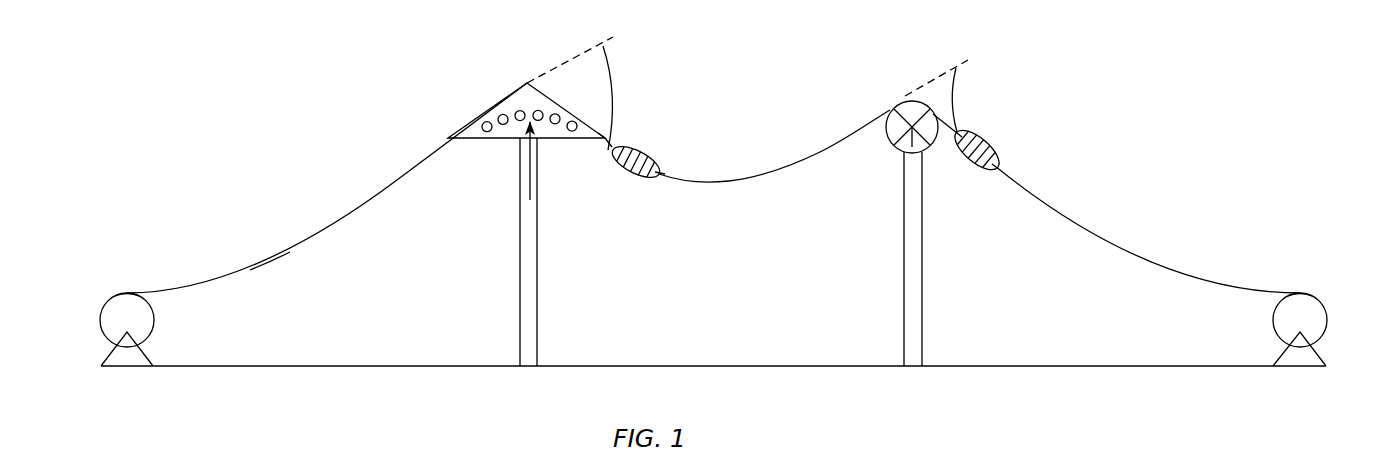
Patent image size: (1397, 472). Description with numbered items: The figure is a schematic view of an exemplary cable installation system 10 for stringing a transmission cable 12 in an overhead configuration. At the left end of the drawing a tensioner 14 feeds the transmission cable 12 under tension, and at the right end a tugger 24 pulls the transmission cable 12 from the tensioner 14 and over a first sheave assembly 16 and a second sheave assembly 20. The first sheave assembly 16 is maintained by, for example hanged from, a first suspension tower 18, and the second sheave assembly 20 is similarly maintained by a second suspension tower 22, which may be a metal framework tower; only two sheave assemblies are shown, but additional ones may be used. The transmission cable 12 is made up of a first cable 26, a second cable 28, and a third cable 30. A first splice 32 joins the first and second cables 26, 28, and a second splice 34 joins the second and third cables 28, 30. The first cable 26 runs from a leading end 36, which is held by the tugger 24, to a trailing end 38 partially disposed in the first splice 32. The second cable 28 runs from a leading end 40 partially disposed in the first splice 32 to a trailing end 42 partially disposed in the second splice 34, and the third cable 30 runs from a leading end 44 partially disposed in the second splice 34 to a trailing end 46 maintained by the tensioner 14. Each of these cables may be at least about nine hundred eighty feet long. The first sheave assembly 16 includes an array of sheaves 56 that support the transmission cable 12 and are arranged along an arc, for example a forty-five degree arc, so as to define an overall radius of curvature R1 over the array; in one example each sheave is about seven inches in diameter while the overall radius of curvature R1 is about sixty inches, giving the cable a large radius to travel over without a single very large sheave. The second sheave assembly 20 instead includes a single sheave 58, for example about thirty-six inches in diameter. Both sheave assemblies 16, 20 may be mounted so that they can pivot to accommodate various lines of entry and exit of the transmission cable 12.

The cable installation system 10 is at (213, 143).
The transmission cable 12 is at (317, 232).
The tensioner 14 is at (98, 307).
The first sheave assembly 16 is at (493, 142).
The first suspension tower 18 is at (512, 293).
The second sheave assembly 20 is at (885, 138).
The second suspension tower 22 is at (890, 293).
The tugger 24 is at (1328, 305).
The first cable 26 is at (1120, 257).
The second cable 28 is at (772, 177).
The third cable 30 is at (270, 262).
The first splice 32 is at (965, 165).
The second splice 34 is at (633, 182).
The leading end 36 is at (1305, 292).
The trailing end 38 is at (1008, 161).
The leading end 40 is at (961, 128).
The trailing end 42 is at (665, 163).
The leading end 44 is at (611, 145).
The trailing end 46 is at (126, 291).
The array of sheaves 56 is at (540, 124).
The sheave 58 is at (909, 152).
The overall radius of curvature R1 is at (532, 183).